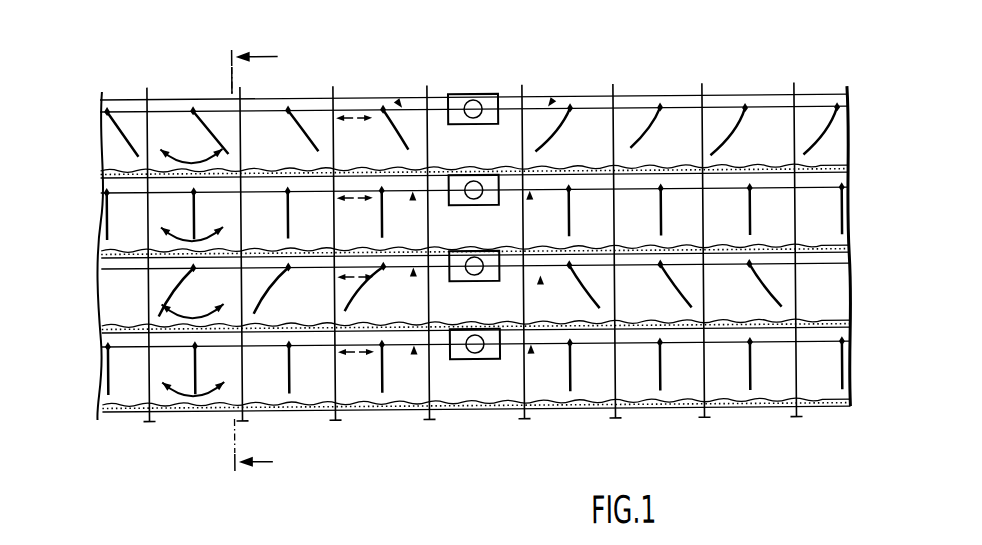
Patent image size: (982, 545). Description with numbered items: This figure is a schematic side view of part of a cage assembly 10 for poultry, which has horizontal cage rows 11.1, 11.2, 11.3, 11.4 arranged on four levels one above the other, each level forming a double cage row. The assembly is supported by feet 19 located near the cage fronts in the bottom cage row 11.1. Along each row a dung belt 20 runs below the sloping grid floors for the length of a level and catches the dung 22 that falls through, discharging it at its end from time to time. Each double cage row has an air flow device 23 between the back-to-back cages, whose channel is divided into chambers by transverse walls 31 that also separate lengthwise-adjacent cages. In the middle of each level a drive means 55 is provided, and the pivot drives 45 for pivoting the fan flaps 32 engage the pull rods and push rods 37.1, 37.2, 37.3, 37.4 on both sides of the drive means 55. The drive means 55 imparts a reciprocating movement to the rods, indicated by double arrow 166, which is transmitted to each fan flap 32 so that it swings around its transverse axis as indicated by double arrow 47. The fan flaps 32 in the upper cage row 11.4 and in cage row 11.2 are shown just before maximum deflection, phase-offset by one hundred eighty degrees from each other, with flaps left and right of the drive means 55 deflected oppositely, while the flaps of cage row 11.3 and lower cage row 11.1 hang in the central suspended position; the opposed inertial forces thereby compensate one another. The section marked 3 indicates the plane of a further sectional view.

The cage assembly 10 is at (177, 81).
The section line III-III 3 is at (266, 260).
The transverse walls 31 is at (426, 92).
The feet 19 is at (146, 420).
The dung belt 20 is at (668, 417).
The dung 22 is at (832, 172).
The air flow device 23 is at (87, 209).
The pull rod and push rod 37.1 is at (107, 347).
The pull rod and push rod 37.2 is at (108, 269).
The pull rod and push rod 37.3 is at (107, 192).
The pull rod and push rod 37.4 is at (111, 110).
The lower cage row 11.1 is at (858, 388).
The cage row 11.2 is at (855, 328).
The cage row 11.3 is at (855, 246).
The upper cage row 11.4 is at (873, 171).
The drive means 55 is at (490, 97).
The fan flap 32 is at (298, 138).
The double arrow 47 is at (192, 158).
The double arrow 166 is at (370, 123).
The pivot drive 45 is at (398, 104).